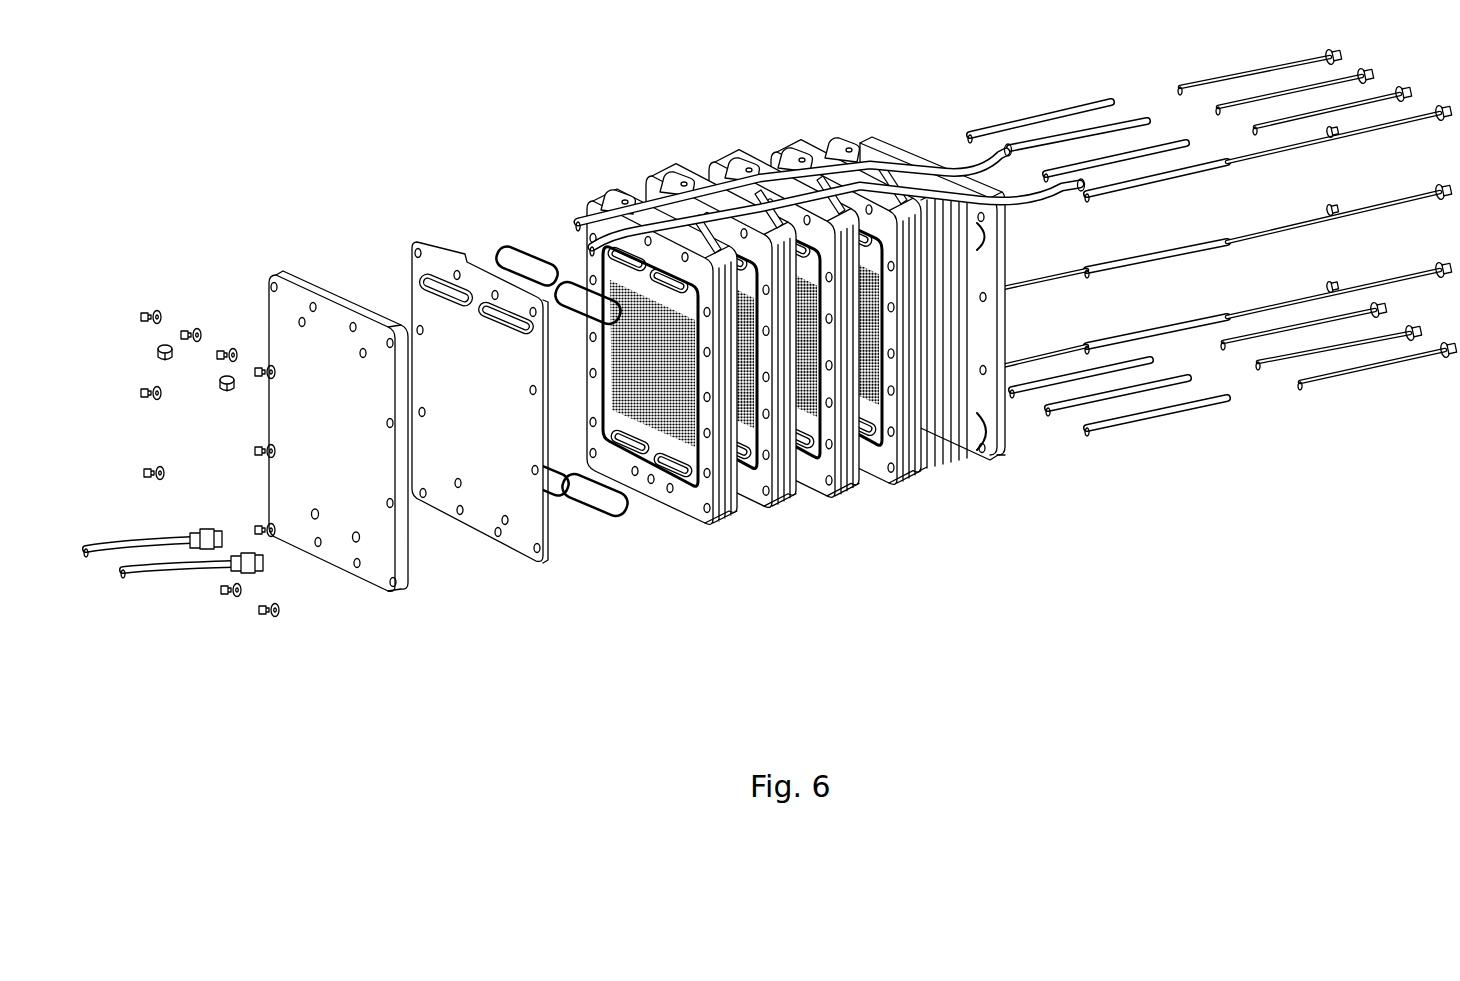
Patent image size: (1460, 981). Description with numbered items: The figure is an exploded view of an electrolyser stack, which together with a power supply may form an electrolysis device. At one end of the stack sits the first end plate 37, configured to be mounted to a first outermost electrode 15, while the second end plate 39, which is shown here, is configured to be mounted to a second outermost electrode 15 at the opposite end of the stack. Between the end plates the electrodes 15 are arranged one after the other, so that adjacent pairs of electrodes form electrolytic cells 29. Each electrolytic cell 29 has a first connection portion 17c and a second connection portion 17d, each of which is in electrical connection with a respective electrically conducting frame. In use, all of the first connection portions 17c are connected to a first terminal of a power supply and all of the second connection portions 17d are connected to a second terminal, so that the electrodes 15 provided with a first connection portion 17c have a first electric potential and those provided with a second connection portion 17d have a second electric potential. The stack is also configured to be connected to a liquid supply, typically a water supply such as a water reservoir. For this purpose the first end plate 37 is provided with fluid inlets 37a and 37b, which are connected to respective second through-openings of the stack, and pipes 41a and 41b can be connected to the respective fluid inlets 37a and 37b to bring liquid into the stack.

The electrode 15 is at (737, 515).
The first connection portion 17c is at (683, 180).
The second connection portion 17d is at (757, 210).
The electrolytic cell 29 is at (830, 344).
The first end plate 37 is at (343, 439).
The fluid inlet 37a is at (317, 519).
The fluid inlet 37b is at (358, 542).
The second end plate 39 is at (908, 163).
The pipe 41a is at (130, 548).
The pipe 41b is at (162, 581).